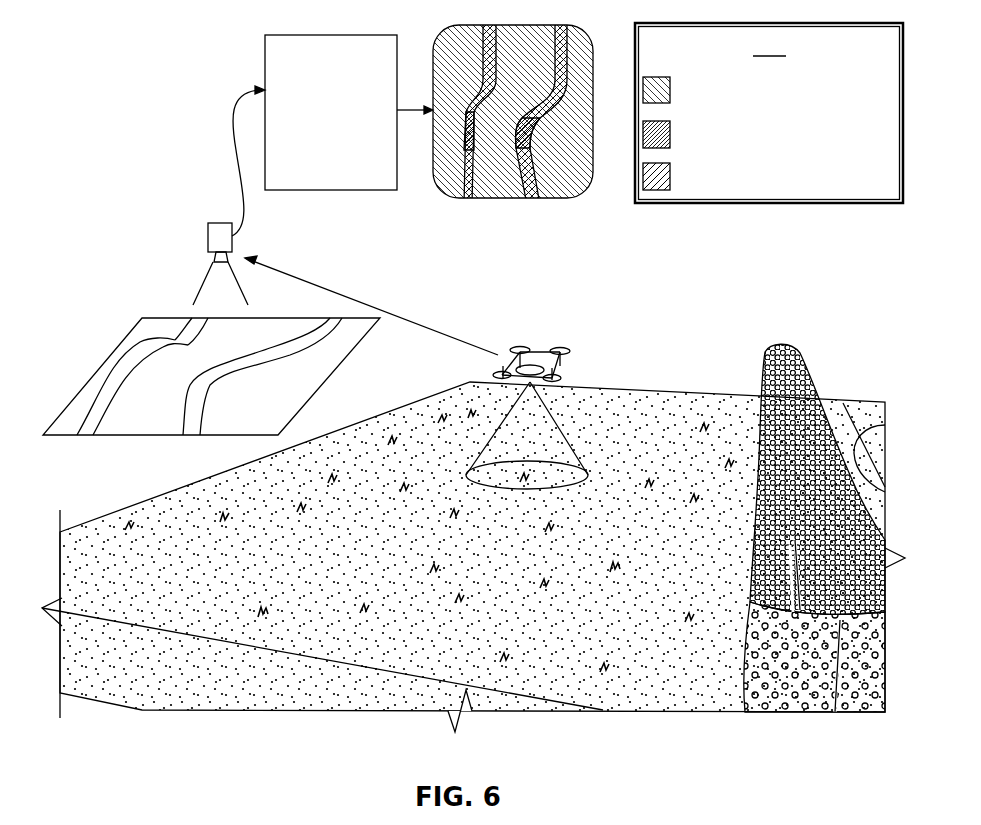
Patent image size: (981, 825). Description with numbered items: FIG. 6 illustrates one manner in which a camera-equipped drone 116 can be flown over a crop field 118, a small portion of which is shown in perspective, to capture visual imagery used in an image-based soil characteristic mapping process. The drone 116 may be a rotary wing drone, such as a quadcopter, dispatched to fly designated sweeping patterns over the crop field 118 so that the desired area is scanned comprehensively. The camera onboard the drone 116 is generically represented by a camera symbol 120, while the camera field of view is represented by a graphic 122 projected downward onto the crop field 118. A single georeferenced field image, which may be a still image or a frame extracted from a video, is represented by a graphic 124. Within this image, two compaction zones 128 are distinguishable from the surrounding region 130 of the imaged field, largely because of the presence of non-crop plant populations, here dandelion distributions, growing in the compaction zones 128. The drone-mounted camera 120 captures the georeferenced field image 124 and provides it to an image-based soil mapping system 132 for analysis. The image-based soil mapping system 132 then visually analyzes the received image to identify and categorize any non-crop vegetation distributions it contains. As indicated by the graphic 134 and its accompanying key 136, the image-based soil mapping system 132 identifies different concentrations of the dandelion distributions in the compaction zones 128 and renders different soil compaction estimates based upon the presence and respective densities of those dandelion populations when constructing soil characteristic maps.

The camera-equipped drone 116 is at (566, 358).
The crop field 118 is at (206, 590).
The camera 120 is at (213, 241).
The camera field of view 122 is at (560, 430).
The georeferenced field image 124 is at (211, 350).
The compaction zones 128 is at (203, 393).
The surrounding region 130 is at (251, 347).
The image-based soil mapping system 132 is at (312, 181).
The graphic 134 is at (450, 38).
The key 136 is at (899, 55).